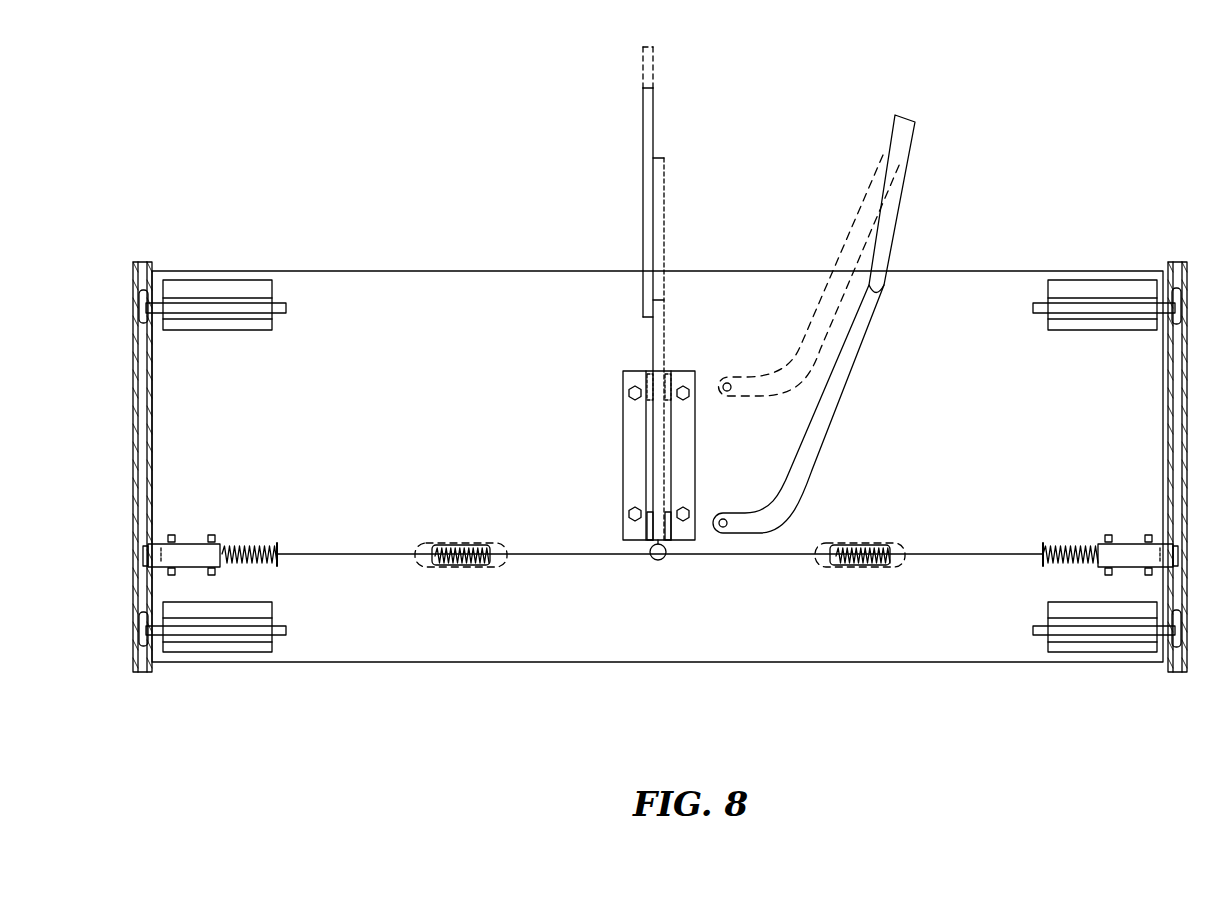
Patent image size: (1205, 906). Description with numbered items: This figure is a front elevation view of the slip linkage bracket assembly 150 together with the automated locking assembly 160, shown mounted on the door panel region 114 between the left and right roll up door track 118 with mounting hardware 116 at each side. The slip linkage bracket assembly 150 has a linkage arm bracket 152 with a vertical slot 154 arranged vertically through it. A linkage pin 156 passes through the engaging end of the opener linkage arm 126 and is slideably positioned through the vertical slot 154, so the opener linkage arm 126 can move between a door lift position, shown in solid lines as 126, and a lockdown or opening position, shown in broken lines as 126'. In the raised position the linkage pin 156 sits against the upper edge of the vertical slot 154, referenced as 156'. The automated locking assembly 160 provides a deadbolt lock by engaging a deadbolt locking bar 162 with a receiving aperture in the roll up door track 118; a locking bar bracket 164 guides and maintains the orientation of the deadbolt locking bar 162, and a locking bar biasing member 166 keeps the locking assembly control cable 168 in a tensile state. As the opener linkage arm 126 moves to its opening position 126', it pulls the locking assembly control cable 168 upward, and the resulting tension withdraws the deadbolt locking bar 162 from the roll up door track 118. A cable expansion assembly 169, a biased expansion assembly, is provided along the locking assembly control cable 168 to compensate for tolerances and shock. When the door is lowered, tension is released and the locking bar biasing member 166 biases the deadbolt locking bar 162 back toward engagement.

The main frame plate 114 is at (450, 628).
The mounting bar assembly 116 is at (150, 309).
The roll up door track 118 is at (141, 262).
The opener linkage arm 126 is at (747, 314).
The opener linkage arm lockdown position 126' is at (735, 221).
The slip linkage bracket assembly 150 is at (640, 455).
The linkage arm bracket 152 is at (697, 446).
The vertical slot 154 is at (645, 455).
The linkage pin 156 is at (706, 561).
The linkage pin upper position 156' is at (608, 350).
The automated locking assembly 160 is at (660, 540).
The deadbolt locking bar 162 is at (190, 543).
The locking bar bracket 164 is at (214, 536).
The locking bar biasing member 166 is at (250, 546).
The locking assembly control cable 168 is at (590, 560).
The cable expansion assembly 169 is at (462, 545).